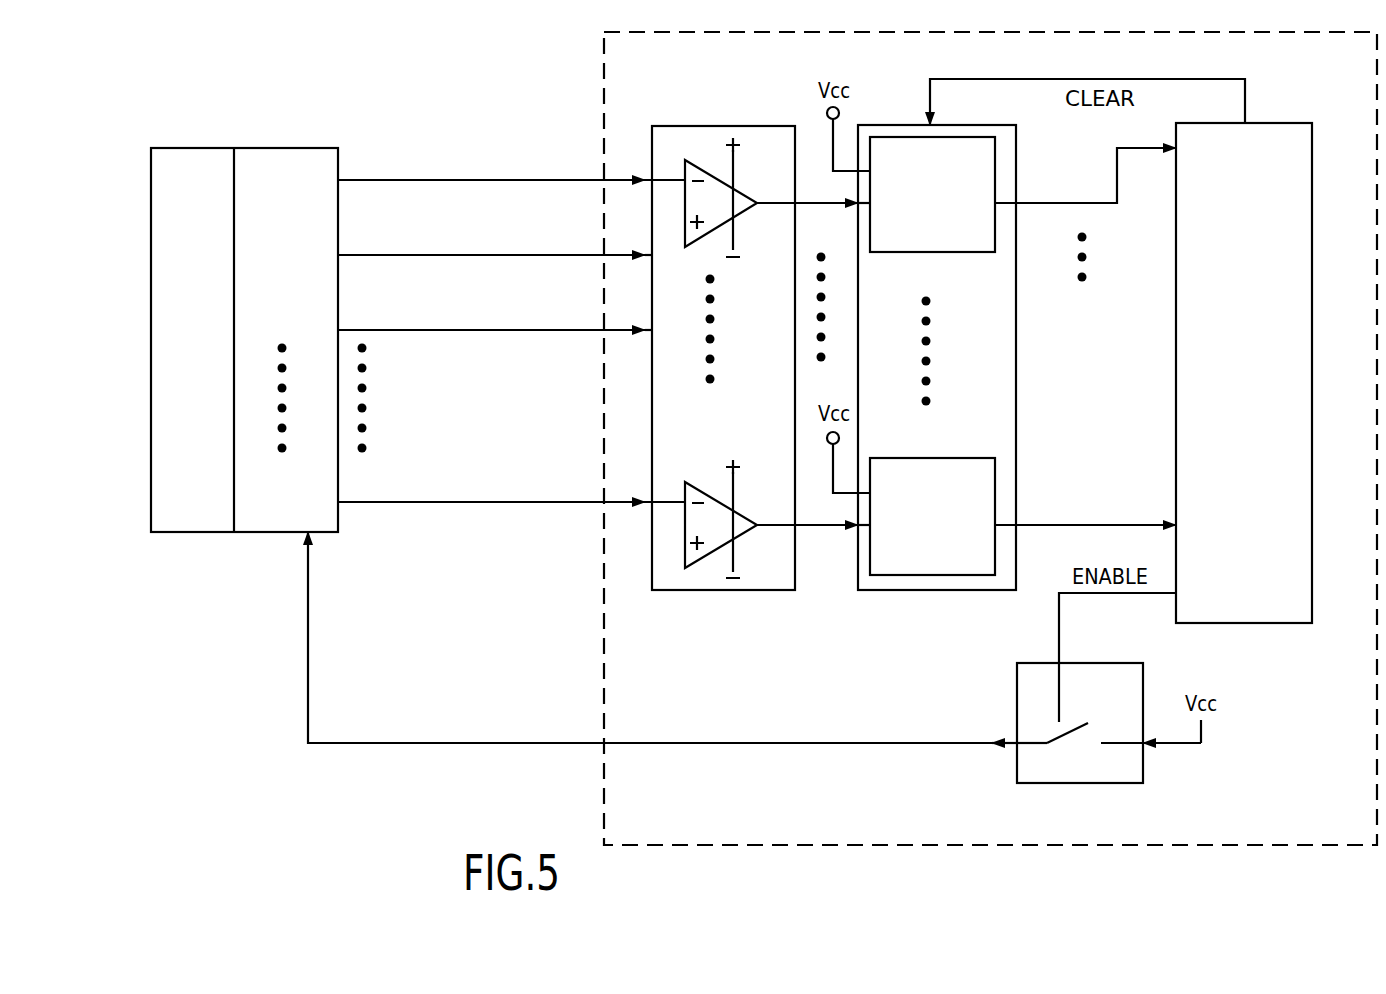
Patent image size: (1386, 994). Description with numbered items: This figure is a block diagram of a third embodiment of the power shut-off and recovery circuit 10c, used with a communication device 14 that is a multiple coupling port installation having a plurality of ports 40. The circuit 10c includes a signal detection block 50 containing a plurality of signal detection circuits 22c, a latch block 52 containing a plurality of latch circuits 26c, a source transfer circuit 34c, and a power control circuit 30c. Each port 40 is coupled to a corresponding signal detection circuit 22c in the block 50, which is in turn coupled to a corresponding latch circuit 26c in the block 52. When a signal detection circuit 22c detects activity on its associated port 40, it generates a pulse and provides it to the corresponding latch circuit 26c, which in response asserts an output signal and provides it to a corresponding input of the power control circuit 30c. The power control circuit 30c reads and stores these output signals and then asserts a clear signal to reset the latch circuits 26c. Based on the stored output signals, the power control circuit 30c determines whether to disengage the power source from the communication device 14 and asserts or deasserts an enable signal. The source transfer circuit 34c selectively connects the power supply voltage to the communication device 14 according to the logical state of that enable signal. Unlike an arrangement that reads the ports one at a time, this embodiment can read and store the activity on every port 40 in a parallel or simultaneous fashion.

The power shut-off and recovery circuit 10c is at (604, 93).
The communication device 14 is at (268, 342).
The port 40 is at (282, 148).
The signal detection block 50 is at (719, 322).
The signal detection circuit 22c is at (703, 172).
The latch block 52 is at (979, 316).
The latch circuit 26c is at (995, 166).
The power control circuit 30c is at (1288, 123).
The source transfer circuit 34c is at (1078, 771).